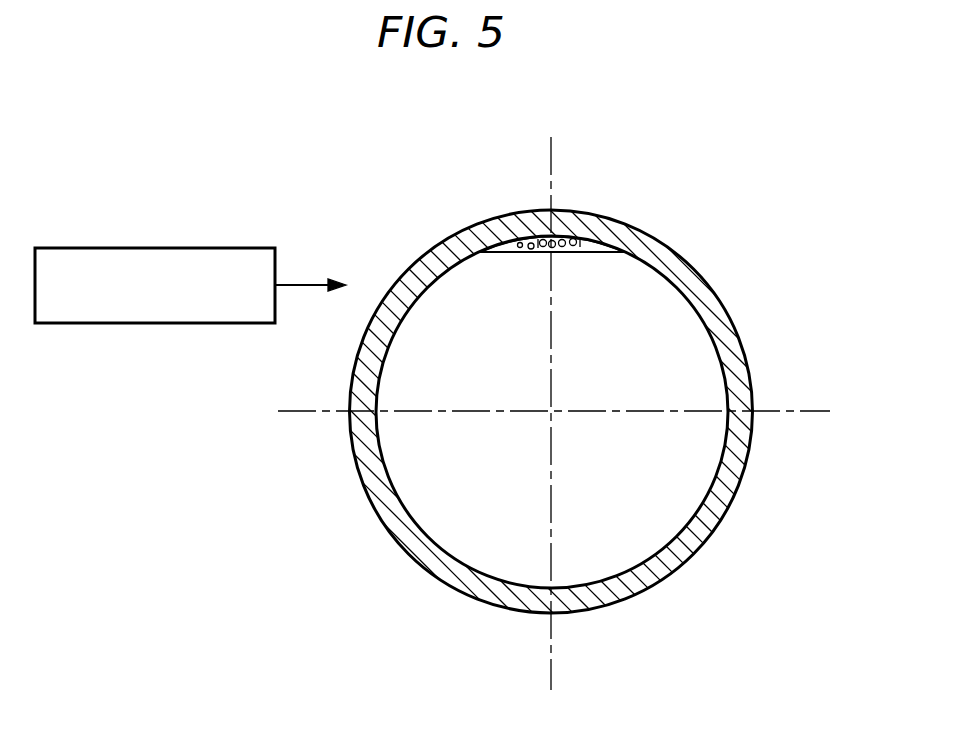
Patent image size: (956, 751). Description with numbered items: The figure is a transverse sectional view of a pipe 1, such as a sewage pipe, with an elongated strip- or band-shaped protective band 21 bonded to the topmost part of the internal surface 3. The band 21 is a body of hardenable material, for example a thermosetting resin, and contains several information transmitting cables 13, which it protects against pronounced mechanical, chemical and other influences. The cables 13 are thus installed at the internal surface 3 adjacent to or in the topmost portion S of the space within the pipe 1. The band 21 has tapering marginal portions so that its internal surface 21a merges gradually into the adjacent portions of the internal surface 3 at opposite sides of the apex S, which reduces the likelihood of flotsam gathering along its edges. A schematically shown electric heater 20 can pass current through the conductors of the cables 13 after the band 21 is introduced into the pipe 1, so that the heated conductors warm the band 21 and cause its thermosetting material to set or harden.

The pipe 1 is at (722, 298).
The internal surface 3 is at (702, 505).
The information transmitting cables 13 is at (585, 238).
The electric heater 20 is at (268, 275).
The protective band or strip 21 is at (571, 254).
The internal surface of the band 21a is at (515, 254).
The topmost portion or apex S is at (535, 236).